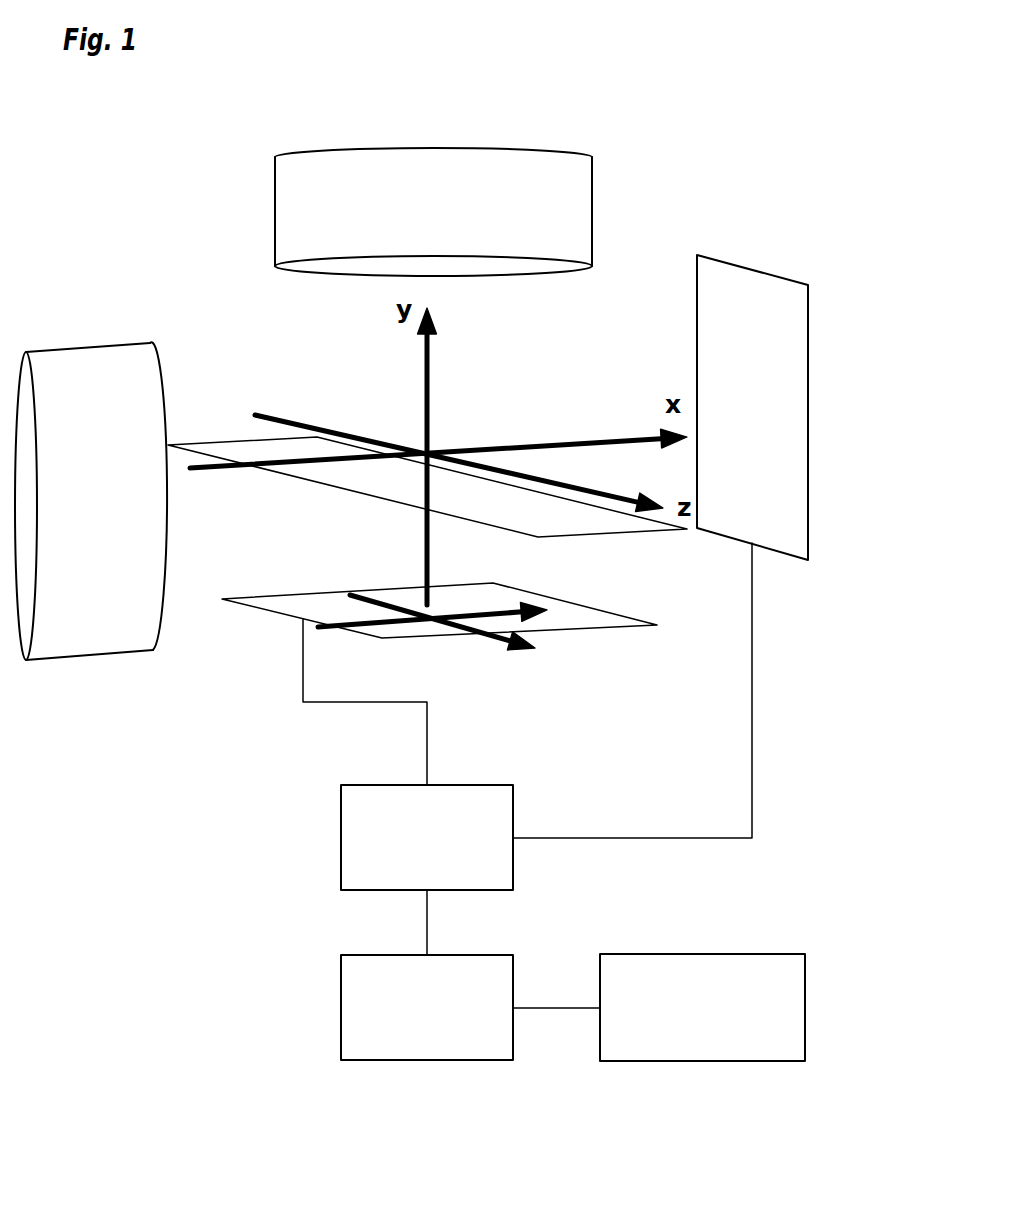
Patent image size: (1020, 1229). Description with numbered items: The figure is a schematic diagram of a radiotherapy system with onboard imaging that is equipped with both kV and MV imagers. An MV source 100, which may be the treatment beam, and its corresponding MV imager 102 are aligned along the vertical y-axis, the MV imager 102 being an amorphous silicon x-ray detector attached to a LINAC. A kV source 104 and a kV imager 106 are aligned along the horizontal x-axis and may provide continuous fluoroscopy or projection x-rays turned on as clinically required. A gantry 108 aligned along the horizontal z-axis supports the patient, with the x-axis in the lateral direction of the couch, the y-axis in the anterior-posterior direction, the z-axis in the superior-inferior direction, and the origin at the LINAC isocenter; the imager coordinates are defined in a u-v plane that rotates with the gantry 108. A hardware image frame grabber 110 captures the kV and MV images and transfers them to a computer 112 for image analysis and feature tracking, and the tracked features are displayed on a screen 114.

The MV source 100 is at (423, 203).
The MV imager 102 is at (253, 597).
The kV source 104 is at (98, 482).
The kV imager 106 is at (752, 363).
The gantry 108 is at (243, 438).
The image frame grabber 110 is at (402, 828).
The computer 112 is at (402, 997).
The screen 114 is at (662, 998).